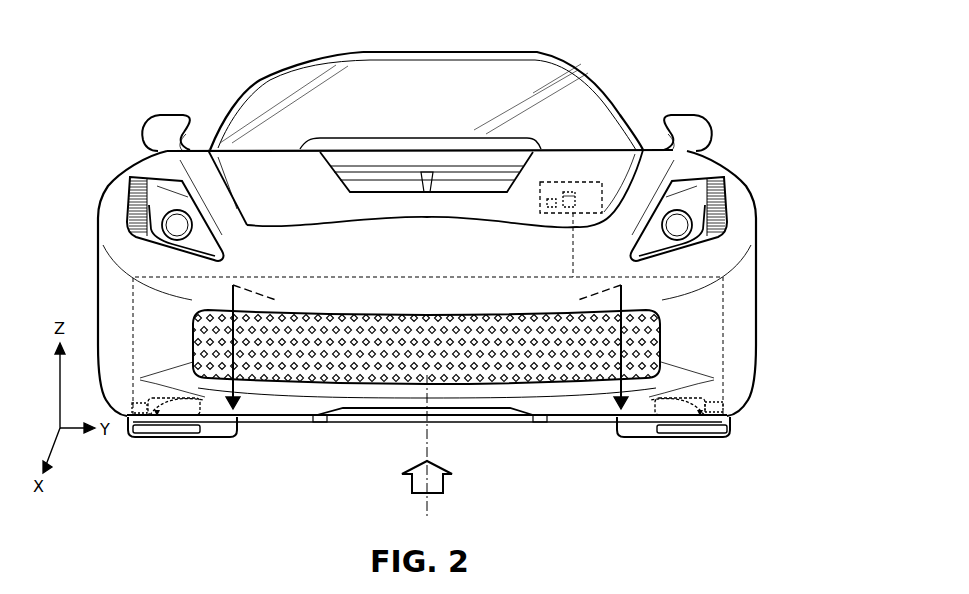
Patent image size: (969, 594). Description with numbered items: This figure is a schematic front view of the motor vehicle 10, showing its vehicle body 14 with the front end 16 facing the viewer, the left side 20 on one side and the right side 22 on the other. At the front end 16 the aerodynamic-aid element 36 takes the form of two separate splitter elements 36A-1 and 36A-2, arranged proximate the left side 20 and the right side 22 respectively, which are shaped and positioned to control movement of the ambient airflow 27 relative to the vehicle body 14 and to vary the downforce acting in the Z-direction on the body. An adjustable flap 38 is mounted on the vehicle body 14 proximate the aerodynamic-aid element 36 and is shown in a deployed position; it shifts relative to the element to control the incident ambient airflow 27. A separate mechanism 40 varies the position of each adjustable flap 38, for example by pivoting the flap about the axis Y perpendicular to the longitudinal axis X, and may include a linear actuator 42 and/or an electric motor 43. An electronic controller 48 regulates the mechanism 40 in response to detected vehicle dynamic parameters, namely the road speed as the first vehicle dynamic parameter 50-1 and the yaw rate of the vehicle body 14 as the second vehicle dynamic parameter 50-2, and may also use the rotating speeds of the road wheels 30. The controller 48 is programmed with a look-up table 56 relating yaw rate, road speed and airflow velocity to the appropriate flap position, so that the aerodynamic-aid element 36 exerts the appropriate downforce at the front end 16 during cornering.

The motor vehicle 10 is at (733, 127).
The vehicle body 14 is at (262, 97).
The front end 16 is at (170, 325).
The left side 20 is at (729, 175).
The right side 22 is at (126, 176).
The ambient airflow 27 is at (406, 482).
The road wheels 30 is at (166, 438).
The aerodynamic-aid element 36 is at (390, 420).
The splitter element 36A-1 is at (554, 418).
The splitter element 36A-2 is at (300, 418).
The adjustable flap 38 is at (130, 436).
The mechanism 40 is at (157, 416).
The linear actuator 42 is at (203, 415).
The electric motor 43 is at (158, 410).
The electronic controller 48 is at (600, 182).
The first vehicle dynamic parameter 50-1 is at (554, 204).
The second vehicle dynamic parameter 50-2 is at (567, 193).
The look-up table 56 is at (575, 190).